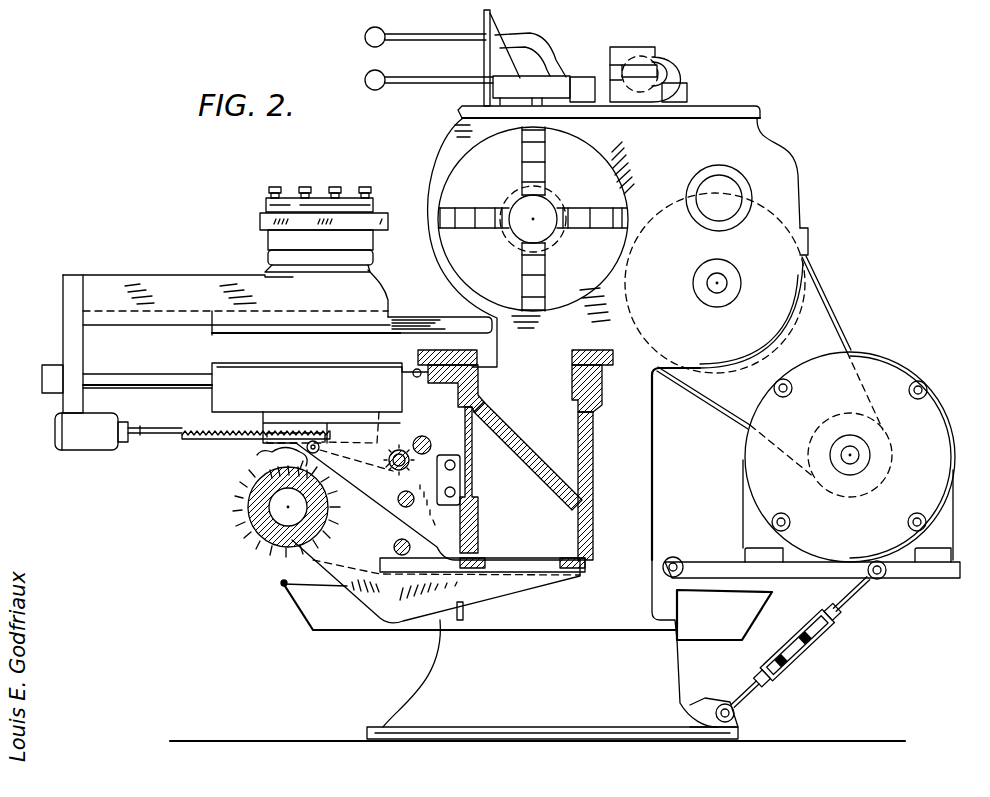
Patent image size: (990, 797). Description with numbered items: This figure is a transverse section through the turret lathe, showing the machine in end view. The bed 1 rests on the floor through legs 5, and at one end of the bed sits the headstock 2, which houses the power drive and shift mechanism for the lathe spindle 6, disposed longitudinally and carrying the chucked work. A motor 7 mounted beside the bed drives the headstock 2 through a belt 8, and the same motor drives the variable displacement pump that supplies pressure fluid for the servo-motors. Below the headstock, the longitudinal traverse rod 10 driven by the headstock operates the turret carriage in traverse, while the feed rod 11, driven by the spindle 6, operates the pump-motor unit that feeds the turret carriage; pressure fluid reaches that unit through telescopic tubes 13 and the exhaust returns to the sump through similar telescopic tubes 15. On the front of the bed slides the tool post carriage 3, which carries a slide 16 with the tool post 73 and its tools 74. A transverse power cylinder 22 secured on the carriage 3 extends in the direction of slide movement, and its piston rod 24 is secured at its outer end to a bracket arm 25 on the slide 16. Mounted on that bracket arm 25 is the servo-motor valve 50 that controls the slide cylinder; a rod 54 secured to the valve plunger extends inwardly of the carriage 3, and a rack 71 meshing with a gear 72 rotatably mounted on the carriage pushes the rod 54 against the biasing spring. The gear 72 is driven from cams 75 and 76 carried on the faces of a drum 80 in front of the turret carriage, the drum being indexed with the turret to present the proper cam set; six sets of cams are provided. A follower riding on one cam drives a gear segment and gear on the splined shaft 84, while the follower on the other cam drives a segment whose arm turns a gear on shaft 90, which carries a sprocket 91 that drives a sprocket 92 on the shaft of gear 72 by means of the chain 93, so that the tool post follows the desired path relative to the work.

The bed 1 is at (655, 452).
The headstock 2 is at (780, 158).
The tool post carriage 3 is at (413, 318).
The legs 5 is at (437, 662).
The lathe spindle 6 is at (563, 191).
The motor 7 is at (945, 400).
The belt 8 is at (834, 314).
The longitudinal traverse rod 10 is at (393, 550).
The feed rod 11 is at (423, 435).
The telescopic tubes 13 is at (450, 458).
The telescopic tubes 15 is at (458, 492).
The slide 16 is at (200, 276).
The transverse power cylinder 22 is at (215, 397).
The piston rod 24 is at (145, 375).
The bracket arm 25 is at (62, 338).
The servo-motor valve 50 is at (95, 449).
The rod 54 is at (140, 436).
The rack 71 is at (216, 439).
The gear 72 is at (314, 441).
The tool post 73 is at (268, 200).
The tools 74 is at (388, 215).
The cam 75 is at (253, 480).
The cam 76 is at (294, 464).
The drum 80 is at (256, 515).
The shaft 84 is at (398, 504).
The shaft 90 is at (408, 469).
The sprocket 91 is at (385, 469).
The sprocket 92 is at (333, 450).
The chain 93 is at (359, 414).